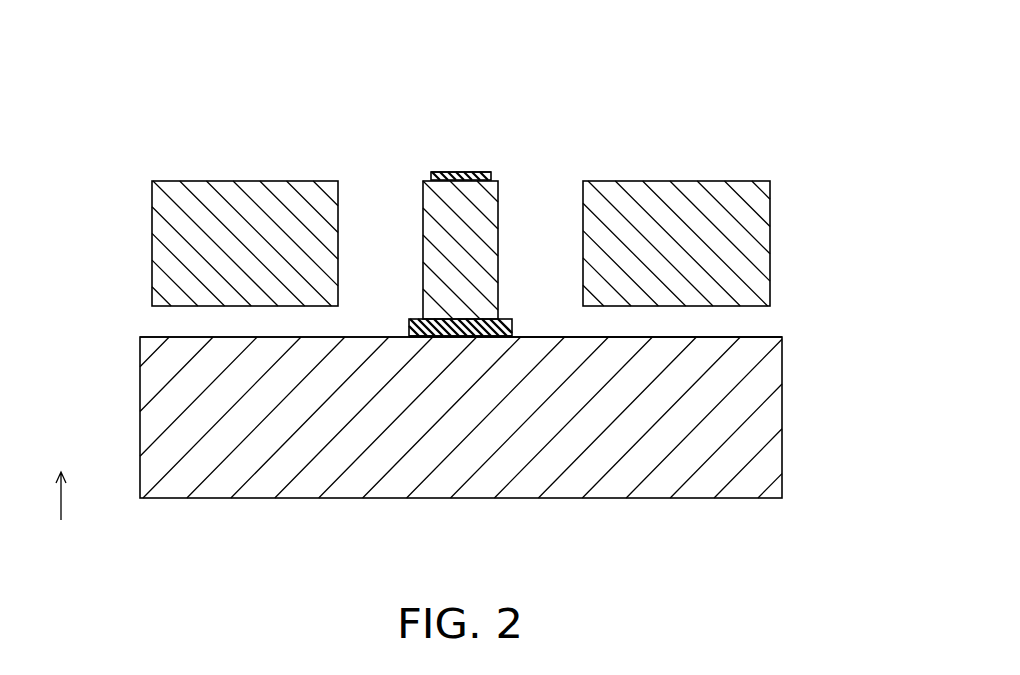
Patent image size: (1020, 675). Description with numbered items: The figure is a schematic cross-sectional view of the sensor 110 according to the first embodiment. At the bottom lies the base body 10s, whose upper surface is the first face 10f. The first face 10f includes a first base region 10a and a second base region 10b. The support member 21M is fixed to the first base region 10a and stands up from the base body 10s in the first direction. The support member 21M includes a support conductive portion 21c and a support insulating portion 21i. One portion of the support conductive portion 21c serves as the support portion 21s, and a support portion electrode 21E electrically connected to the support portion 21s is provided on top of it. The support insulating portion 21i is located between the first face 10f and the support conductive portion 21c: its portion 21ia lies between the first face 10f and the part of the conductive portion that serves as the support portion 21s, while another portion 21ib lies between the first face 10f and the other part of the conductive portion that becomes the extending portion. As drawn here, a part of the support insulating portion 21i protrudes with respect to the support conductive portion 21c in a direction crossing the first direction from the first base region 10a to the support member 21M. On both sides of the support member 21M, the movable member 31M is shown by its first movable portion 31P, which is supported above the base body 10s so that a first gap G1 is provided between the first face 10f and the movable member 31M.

The sensor 110 is at (778, 76).
The movable member 31M is at (176, 147).
The first movable portion 31P is at (243, 197).
The support member 21M is at (497, 167).
The support conductive portion 21c is at (442, 217).
The support portion electrode 21E is at (445, 172).
The support portion 21s is at (475, 187).
The support insulating portion 21i is at (432, 337).
The portion of the support insulating portion 21ia is at (450, 336).
The another portion of the support insulating portion 21ib is at (405, 337).
The base body 10s is at (762, 413).
The first face 10f is at (758, 337).
The first base region 10a is at (465, 337).
The second base region 10b is at (670, 337).
The first gap G1 is at (613, 326).